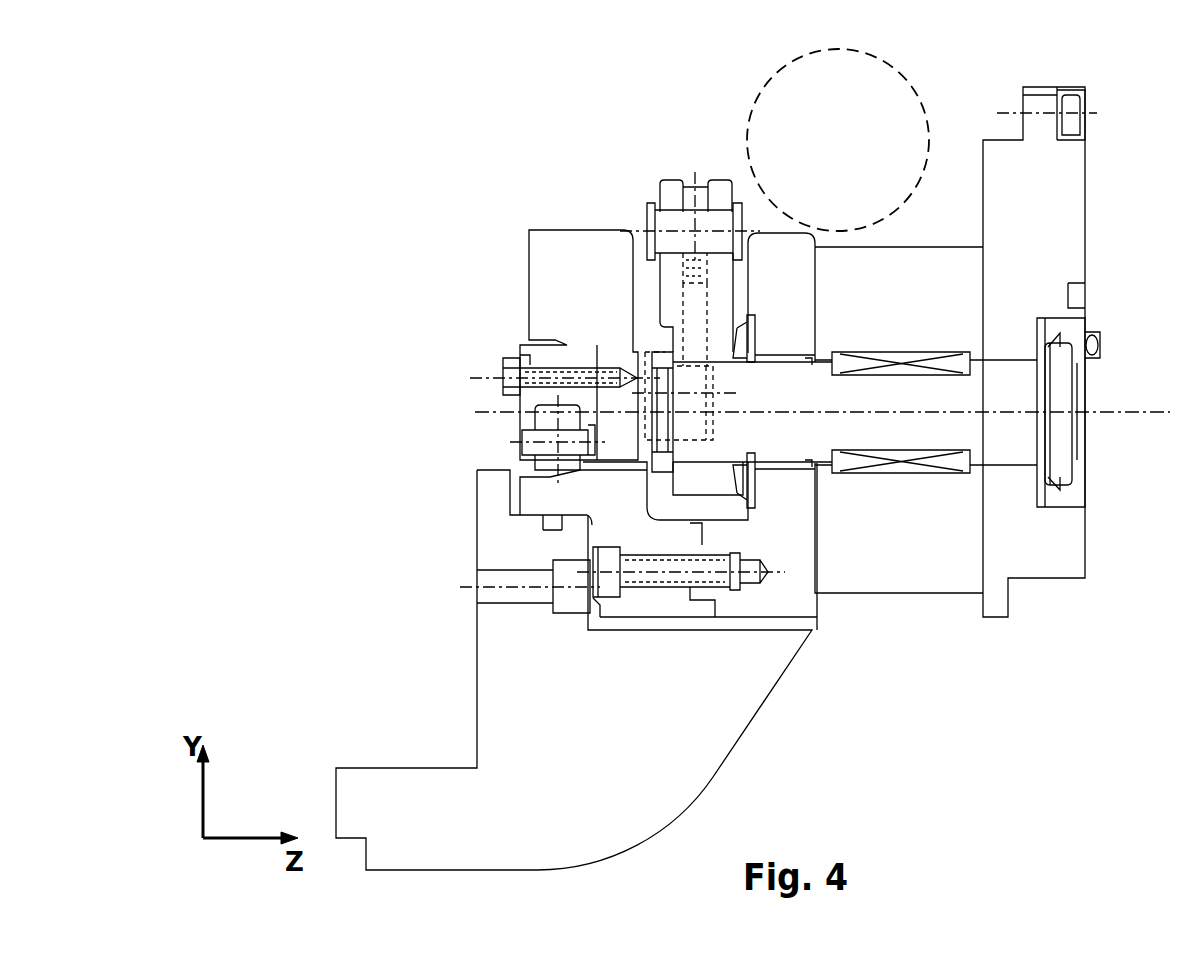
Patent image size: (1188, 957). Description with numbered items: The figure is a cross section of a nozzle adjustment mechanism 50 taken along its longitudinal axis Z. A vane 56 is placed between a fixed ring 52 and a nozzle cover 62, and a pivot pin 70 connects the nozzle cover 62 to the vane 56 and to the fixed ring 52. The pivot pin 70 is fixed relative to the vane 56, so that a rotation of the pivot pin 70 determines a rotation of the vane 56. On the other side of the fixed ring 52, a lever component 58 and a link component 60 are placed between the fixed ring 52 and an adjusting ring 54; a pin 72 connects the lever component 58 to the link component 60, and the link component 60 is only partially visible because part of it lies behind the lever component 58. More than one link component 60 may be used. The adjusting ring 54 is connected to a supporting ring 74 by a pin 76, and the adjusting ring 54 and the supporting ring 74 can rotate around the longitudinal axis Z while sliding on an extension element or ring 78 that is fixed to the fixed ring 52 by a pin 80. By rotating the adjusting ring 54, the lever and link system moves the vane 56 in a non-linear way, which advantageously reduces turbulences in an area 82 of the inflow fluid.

The nozzle adjustment mechanism 50 is at (382, 131).
The fixed ring 52 is at (793, 583).
The adjusting ring 54 is at (543, 277).
The vane 56 is at (897, 557).
The lever component 58 is at (675, 195).
The link component 60 is at (653, 352).
The nozzle cover 62 is at (1055, 233).
The pivot pin 70 is at (1015, 437).
The pin 72 is at (723, 222).
The supporting ring 74 is at (530, 400).
The pin 76 is at (520, 372).
The extension element or ring 78 is at (600, 493).
The pin 80 is at (660, 578).
The area 82 is at (877, 83).